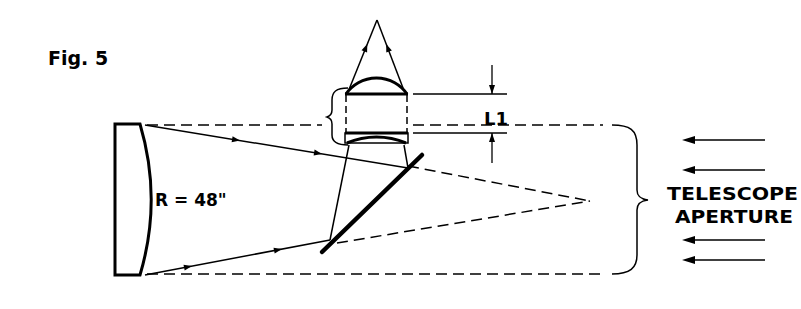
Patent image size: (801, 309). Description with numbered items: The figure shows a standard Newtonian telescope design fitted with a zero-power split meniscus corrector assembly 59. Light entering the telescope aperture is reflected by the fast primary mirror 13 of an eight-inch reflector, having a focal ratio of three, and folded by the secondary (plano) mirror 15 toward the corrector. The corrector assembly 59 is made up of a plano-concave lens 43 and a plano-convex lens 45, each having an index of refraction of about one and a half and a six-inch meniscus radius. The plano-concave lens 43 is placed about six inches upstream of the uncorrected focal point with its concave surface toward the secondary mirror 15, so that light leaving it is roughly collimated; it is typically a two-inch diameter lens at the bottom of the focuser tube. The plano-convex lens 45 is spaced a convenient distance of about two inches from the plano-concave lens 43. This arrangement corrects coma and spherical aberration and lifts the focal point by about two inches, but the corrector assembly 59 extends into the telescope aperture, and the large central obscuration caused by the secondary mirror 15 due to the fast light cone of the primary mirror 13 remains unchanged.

The primary mirror 13 is at (113, 208).
The secondary (plano) mirror 15 is at (370, 207).
The plano-concave lens 43 is at (410, 138).
The plano-convex lens 45 is at (383, 88).
The split meniscus corrector lens 59 is at (327, 117).